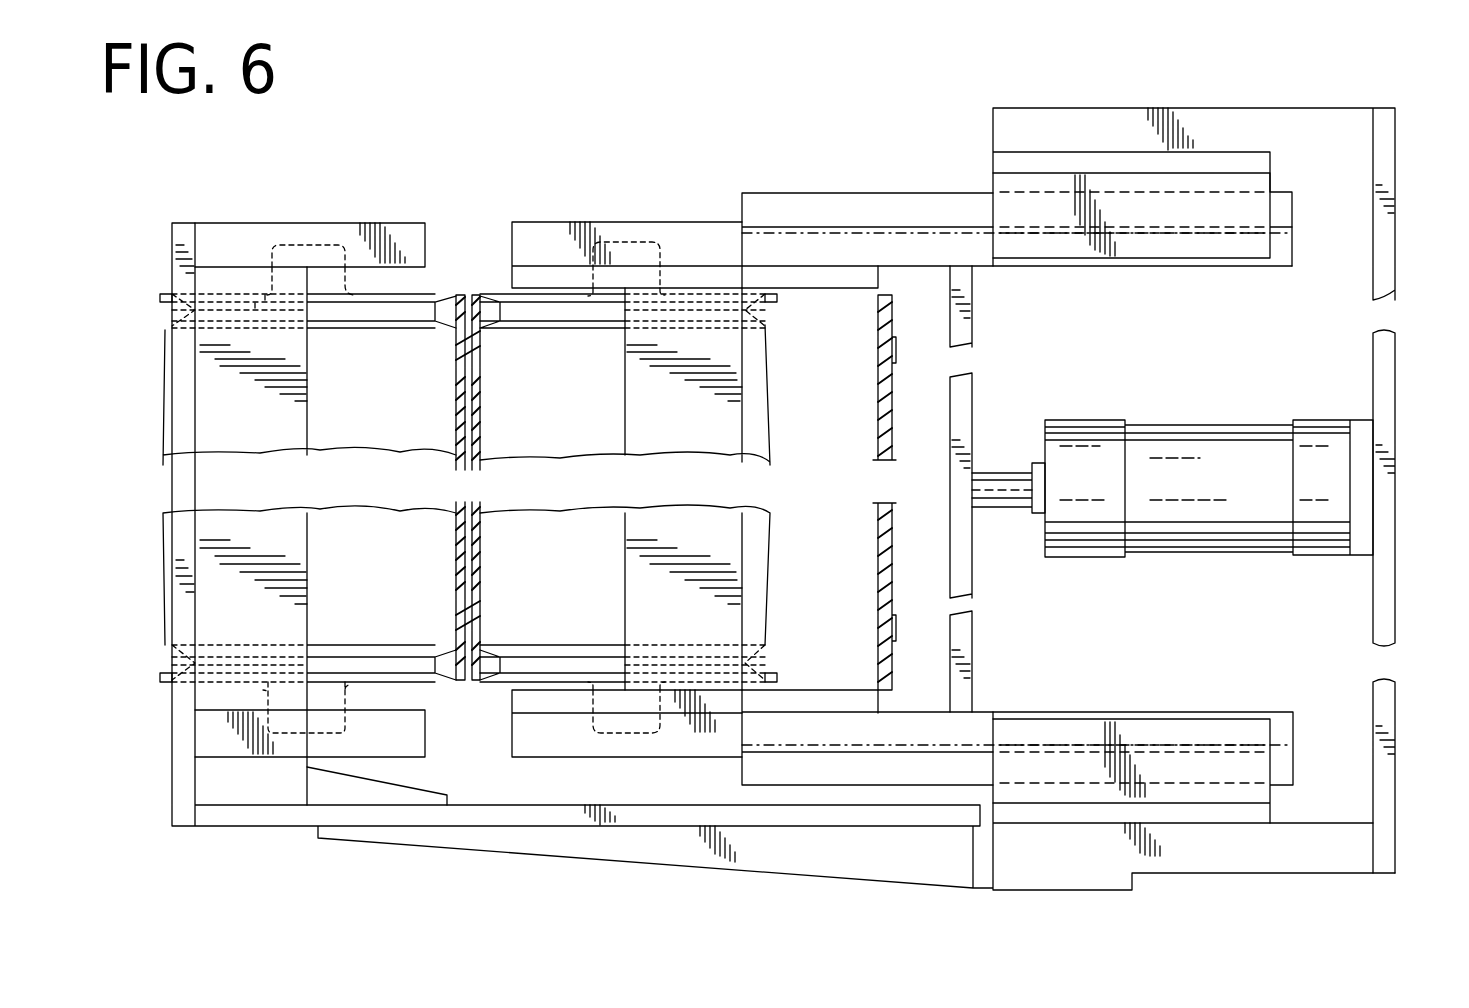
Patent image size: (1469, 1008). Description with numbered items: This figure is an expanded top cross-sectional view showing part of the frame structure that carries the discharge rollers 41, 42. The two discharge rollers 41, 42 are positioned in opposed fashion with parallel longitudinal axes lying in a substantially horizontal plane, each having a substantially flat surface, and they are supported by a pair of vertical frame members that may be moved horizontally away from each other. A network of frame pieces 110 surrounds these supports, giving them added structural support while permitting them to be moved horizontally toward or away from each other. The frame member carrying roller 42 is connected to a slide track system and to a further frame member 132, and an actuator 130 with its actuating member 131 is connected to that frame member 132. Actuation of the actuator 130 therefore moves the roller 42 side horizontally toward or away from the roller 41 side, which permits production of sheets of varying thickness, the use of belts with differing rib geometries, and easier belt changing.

The discharge roller 41 is at (345, 416).
The discharge roller 42 is at (612, 419).
The frame pieces 110 is at (1262, 92).
The actuator 130 is at (1235, 495).
The actuating member 131 is at (1002, 474).
The frame member 132 is at (962, 393).